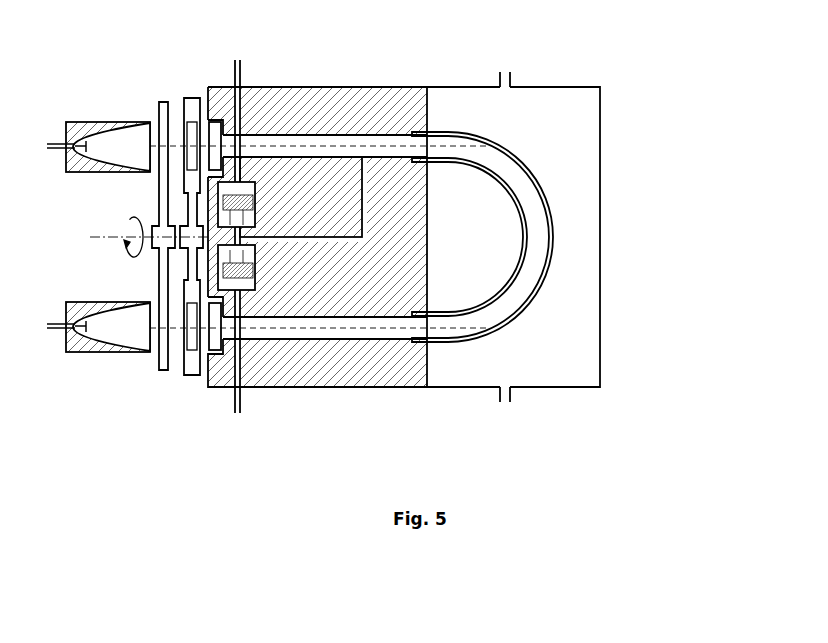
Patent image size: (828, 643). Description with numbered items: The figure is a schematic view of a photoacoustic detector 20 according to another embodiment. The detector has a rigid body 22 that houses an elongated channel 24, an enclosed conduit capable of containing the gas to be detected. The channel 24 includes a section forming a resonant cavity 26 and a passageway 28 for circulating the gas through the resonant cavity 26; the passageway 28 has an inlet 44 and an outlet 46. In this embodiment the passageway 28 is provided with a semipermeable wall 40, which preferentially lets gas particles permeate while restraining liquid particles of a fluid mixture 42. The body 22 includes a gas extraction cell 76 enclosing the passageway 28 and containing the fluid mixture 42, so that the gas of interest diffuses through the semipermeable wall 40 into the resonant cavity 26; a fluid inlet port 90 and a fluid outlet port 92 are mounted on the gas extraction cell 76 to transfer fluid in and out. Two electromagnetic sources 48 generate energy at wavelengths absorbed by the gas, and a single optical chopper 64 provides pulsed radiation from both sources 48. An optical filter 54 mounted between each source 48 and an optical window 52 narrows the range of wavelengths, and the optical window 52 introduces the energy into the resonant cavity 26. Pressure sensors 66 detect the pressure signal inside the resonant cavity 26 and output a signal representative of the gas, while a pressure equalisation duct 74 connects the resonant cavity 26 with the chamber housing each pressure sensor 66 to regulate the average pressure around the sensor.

The photoacoustic detector 20 is at (628, 58).
The body 22 is at (332, 388).
The elongated channel 24 is at (237, 110).
The resonant cavity 26 is at (328, 140).
The passageway 28 is at (542, 283).
The semipermeable wall 40 is at (540, 193).
The fluid mixture 42 is at (558, 363).
The inlet 44 is at (242, 395).
The outlet 46 is at (233, 72).
The electromagnetic source 48 is at (80, 127).
The optical window 52 is at (215, 340).
The optical filter 54 is at (192, 132).
The optical chopper 64 is at (160, 108).
The pressure sensor 66 is at (225, 203).
The pressure equalisation duct 74 is at (338, 240).
The gas extraction cell 76 is at (560, 120).
The fluid inlet port 90 is at (505, 402).
The fluid outlet port 92 is at (508, 72).